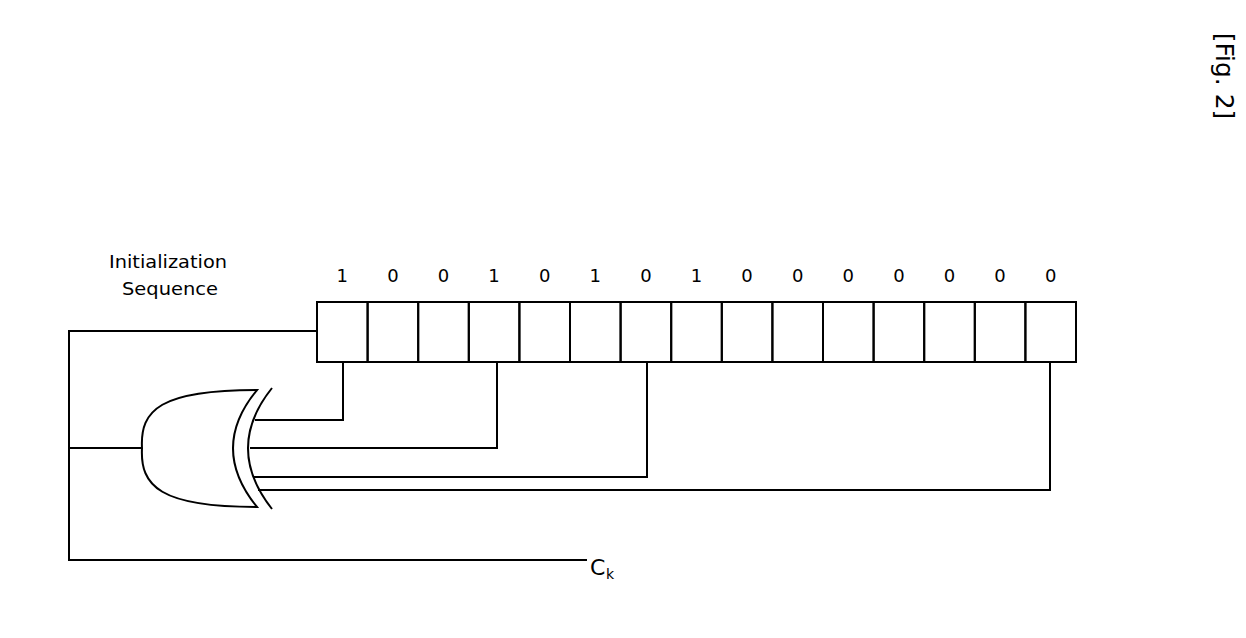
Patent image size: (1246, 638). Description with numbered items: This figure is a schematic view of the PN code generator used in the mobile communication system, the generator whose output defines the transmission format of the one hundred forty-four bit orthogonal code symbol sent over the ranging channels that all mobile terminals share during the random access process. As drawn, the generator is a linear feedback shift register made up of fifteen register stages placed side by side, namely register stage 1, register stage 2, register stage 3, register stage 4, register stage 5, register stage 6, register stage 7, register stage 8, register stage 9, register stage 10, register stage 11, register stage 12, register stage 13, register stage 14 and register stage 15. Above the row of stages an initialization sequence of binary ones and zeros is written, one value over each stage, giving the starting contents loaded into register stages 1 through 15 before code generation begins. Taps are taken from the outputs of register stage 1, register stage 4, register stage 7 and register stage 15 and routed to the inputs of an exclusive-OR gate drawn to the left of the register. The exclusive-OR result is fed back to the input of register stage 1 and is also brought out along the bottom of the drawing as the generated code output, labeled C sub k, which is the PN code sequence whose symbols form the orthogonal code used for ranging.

The shift register stage 1 is at (342, 332).
The shift register stage 2 is at (393, 332).
The shift register stage 3 is at (443, 332).
The shift register stage 4 is at (494, 332).
The shift register stage 5 is at (544, 332).
The shift register stage 6 is at (595, 332).
The shift register stage 7 is at (646, 332).
The shift register stage 8 is at (696, 332).
The shift register stage 9 is at (747, 332).
The shift register stage 10 is at (797, 332).
The shift register stage 11 is at (848, 332).
The shift register stage 12 is at (899, 332).
The shift register stage 13 is at (949, 332).
The shift register stage 14 is at (1000, 332).
The shift register stage 15 is at (1050, 332).